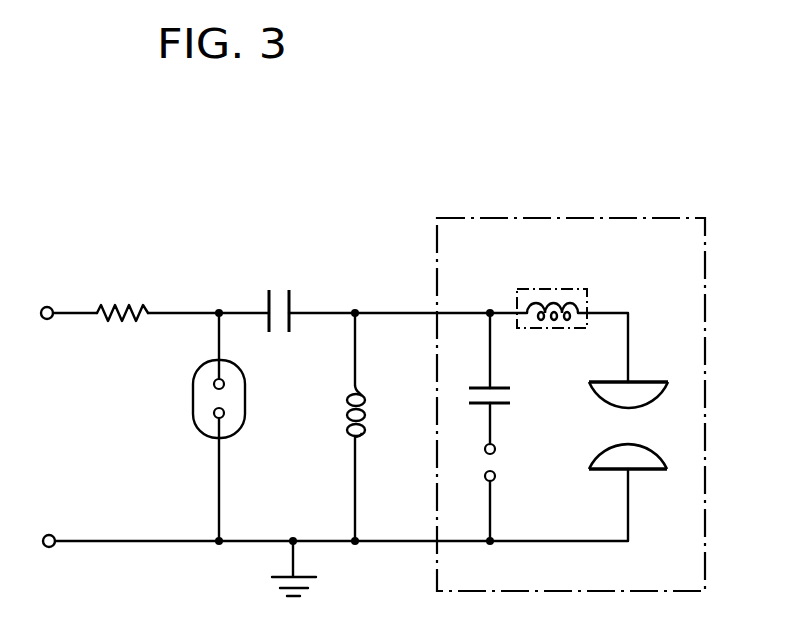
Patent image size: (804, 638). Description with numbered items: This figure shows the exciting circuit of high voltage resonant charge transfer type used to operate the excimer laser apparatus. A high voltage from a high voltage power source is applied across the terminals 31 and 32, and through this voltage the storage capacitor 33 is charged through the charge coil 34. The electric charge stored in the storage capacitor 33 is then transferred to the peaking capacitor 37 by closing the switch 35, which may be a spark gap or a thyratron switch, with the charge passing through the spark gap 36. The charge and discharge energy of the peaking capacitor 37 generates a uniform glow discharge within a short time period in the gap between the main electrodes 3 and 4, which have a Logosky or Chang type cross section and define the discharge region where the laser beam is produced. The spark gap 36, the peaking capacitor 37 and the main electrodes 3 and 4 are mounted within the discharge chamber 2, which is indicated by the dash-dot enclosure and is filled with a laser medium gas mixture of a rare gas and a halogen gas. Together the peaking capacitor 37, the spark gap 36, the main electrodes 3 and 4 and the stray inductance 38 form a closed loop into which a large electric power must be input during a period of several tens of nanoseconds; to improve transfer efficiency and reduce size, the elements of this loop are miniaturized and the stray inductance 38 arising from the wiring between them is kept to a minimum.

The discharge chamber 2 is at (706, 283).
The main electrode 3 is at (656, 381).
The main electrode 4 is at (652, 470).
The terminal 31 is at (49, 548).
The terminal 32 is at (47, 306).
The storage capacitor 33 is at (290, 298).
The charge coil 34 is at (366, 405).
The switch 35 is at (246, 385).
The spark gap 36 is at (497, 458).
The peaking capacitor 37 is at (506, 386).
The stray inductance 38 is at (562, 289).